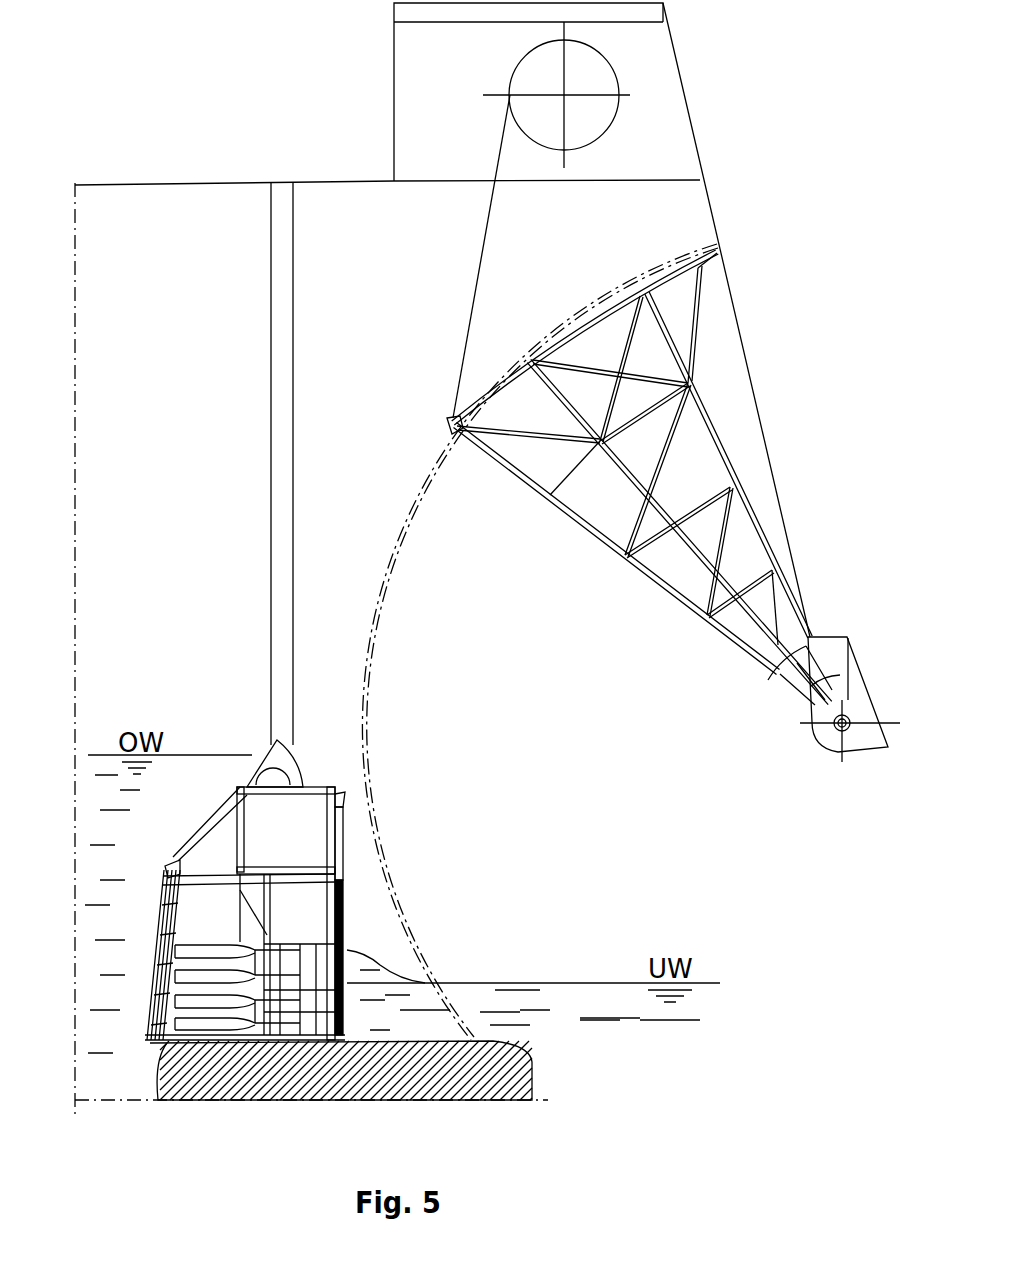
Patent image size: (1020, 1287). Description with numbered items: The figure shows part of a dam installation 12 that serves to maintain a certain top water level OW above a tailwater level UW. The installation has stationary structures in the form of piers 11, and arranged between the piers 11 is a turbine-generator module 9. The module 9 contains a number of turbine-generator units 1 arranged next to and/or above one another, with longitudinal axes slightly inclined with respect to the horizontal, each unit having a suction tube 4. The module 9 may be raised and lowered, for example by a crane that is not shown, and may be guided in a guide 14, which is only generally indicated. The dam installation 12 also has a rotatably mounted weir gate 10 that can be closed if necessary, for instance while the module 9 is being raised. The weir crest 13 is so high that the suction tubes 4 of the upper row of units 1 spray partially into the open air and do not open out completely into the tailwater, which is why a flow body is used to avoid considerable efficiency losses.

The turbine-generator unit 1 is at (170, 1035).
The suction tube 4 is at (318, 1033).
The turbine-generator module 9 is at (153, 957).
The weir gate 10 is at (718, 438).
The pier 11 is at (108, 540).
The dam installation 12 is at (327, 138).
The weir crest 13 is at (423, 1067).
The guide 14 is at (280, 398).